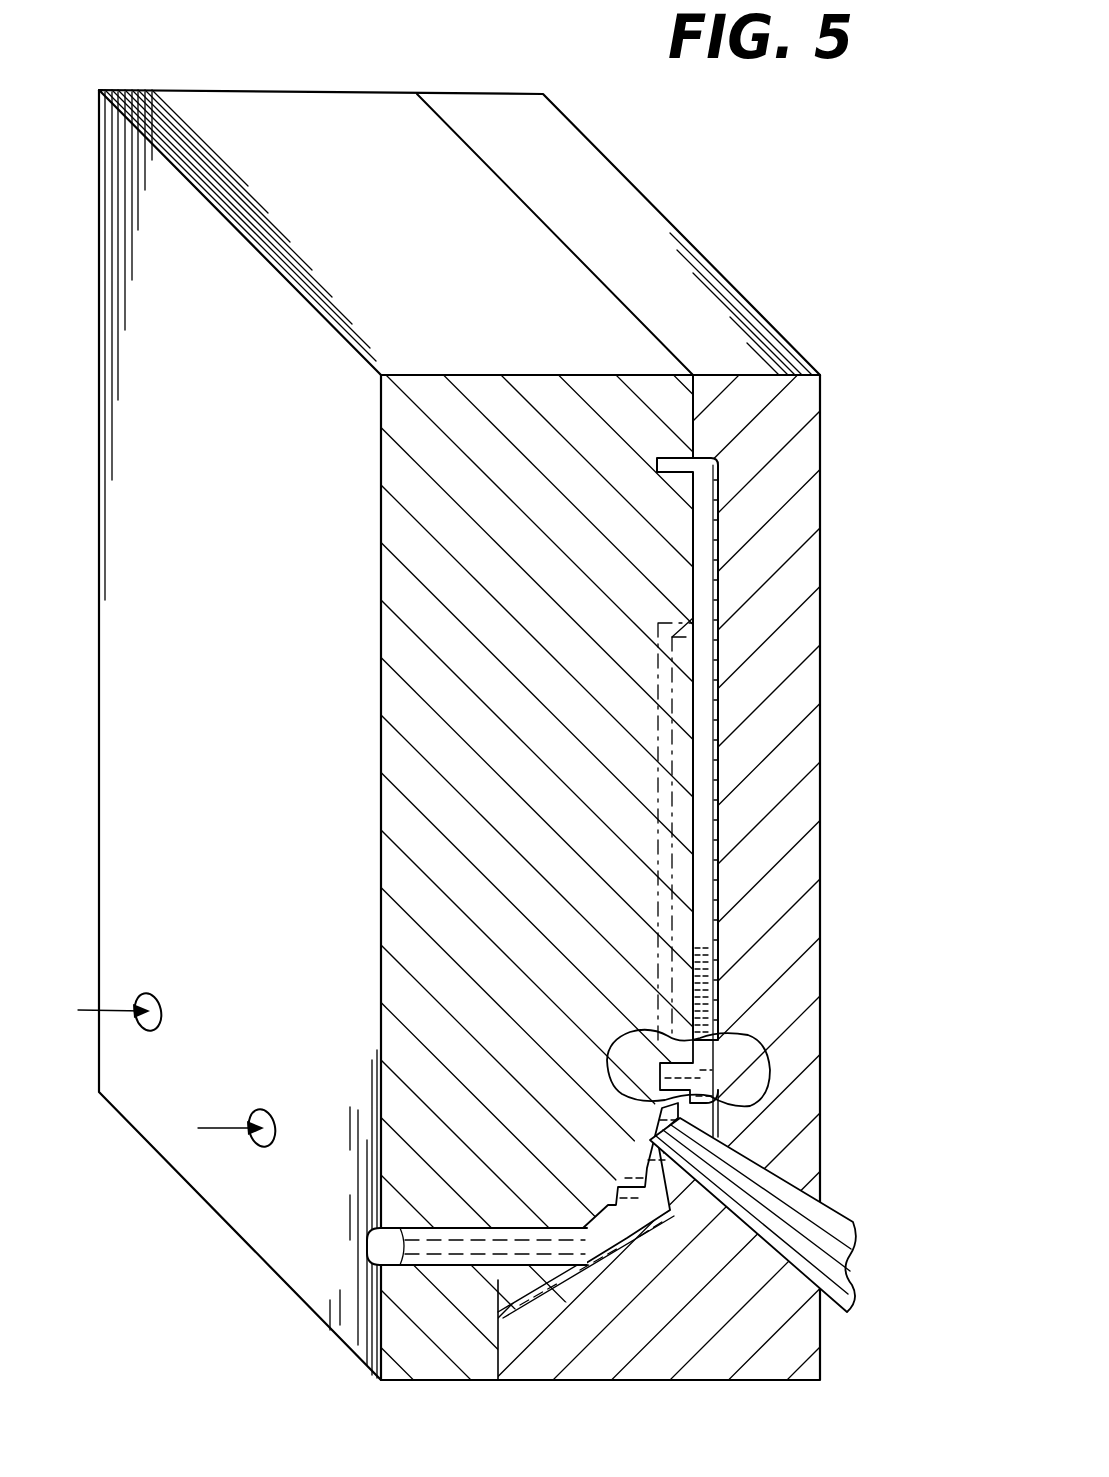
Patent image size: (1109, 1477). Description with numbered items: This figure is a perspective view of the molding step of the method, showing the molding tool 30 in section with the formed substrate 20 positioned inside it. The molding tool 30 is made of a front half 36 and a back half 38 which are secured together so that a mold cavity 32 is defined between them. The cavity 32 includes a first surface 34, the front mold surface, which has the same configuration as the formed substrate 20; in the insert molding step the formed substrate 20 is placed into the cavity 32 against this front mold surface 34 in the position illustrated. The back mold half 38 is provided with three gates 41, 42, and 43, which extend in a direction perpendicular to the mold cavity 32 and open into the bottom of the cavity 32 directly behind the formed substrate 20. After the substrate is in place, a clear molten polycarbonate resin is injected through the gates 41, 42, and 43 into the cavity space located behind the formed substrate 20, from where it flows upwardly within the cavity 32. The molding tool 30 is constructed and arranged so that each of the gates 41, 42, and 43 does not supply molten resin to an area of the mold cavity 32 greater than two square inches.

The molding tool 30 is at (748, 261).
The back half 38 is at (392, 428).
The front half 36 is at (803, 409).
The formed substrate 20 is at (735, 513).
The cavity 32 is at (722, 599).
The first surface 34 is at (722, 727).
The gate 41 is at (158, 1003).
The gate 42 is at (270, 1120).
The gate 43 is at (388, 1245).